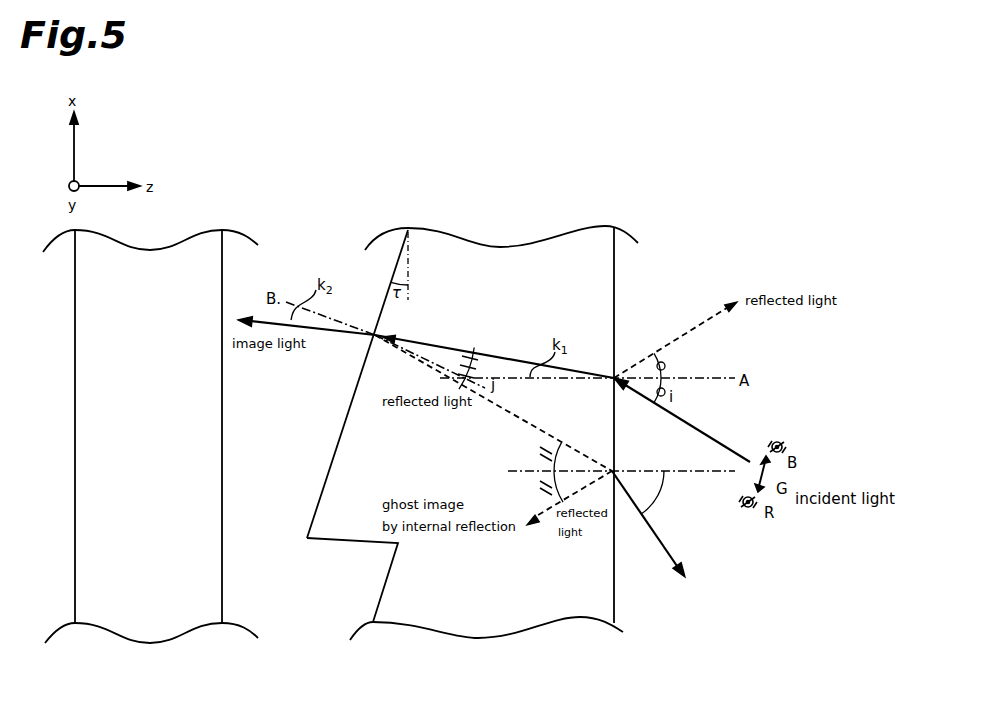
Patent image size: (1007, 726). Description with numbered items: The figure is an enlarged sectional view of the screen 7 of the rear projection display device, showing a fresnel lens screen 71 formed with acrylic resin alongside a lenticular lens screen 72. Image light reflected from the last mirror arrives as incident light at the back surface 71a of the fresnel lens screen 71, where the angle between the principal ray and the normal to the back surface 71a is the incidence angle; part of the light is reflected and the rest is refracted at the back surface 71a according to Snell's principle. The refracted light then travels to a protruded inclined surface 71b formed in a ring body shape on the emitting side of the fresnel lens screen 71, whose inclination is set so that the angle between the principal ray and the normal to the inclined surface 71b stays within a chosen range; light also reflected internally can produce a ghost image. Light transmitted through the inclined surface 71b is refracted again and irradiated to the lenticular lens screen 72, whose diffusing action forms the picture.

The screen 7 is at (383, 198).
The fresnel lens screen 71 is at (480, 464).
The back surface 71a is at (614, 293).
The inclined surface 71b is at (337, 455).
The lenticular lens screen 72 is at (222, 645).